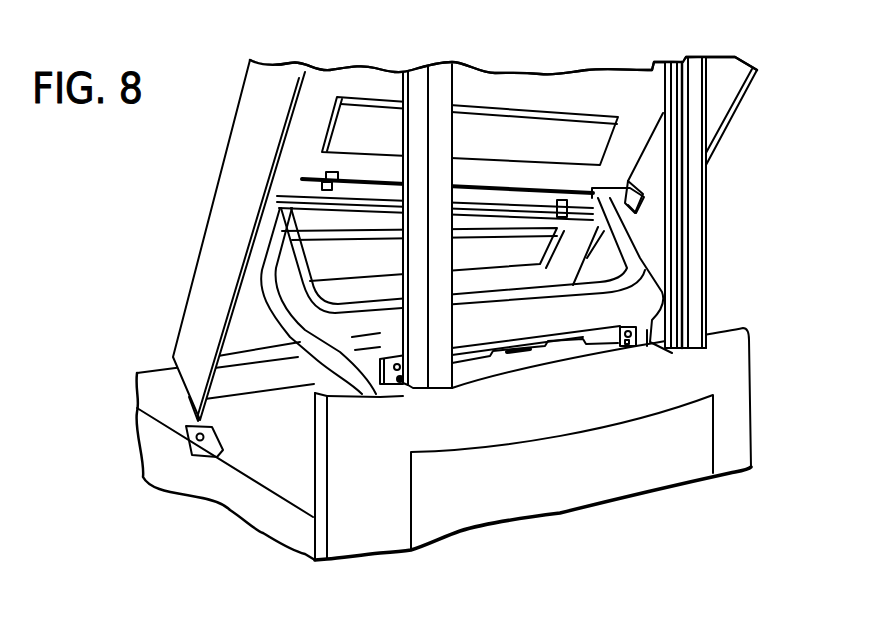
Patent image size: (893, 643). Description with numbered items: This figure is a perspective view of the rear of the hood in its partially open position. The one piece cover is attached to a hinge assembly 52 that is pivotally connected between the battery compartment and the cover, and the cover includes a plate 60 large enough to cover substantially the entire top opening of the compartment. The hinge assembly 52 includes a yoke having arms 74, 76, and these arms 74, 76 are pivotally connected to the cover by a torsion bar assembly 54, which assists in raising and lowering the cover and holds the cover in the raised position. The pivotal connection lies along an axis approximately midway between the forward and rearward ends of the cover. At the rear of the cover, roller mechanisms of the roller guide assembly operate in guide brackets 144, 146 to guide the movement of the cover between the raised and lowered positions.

The plate 60 is at (532, 90).
The torsion bar assembly 54 is at (502, 182).
The arm 76 is at (277, 248).
The arm 74 is at (627, 230).
The guide bracket 146 is at (697, 243).
The hinge assembly 52 is at (276, 322).
The guide bracket 144 is at (425, 370).